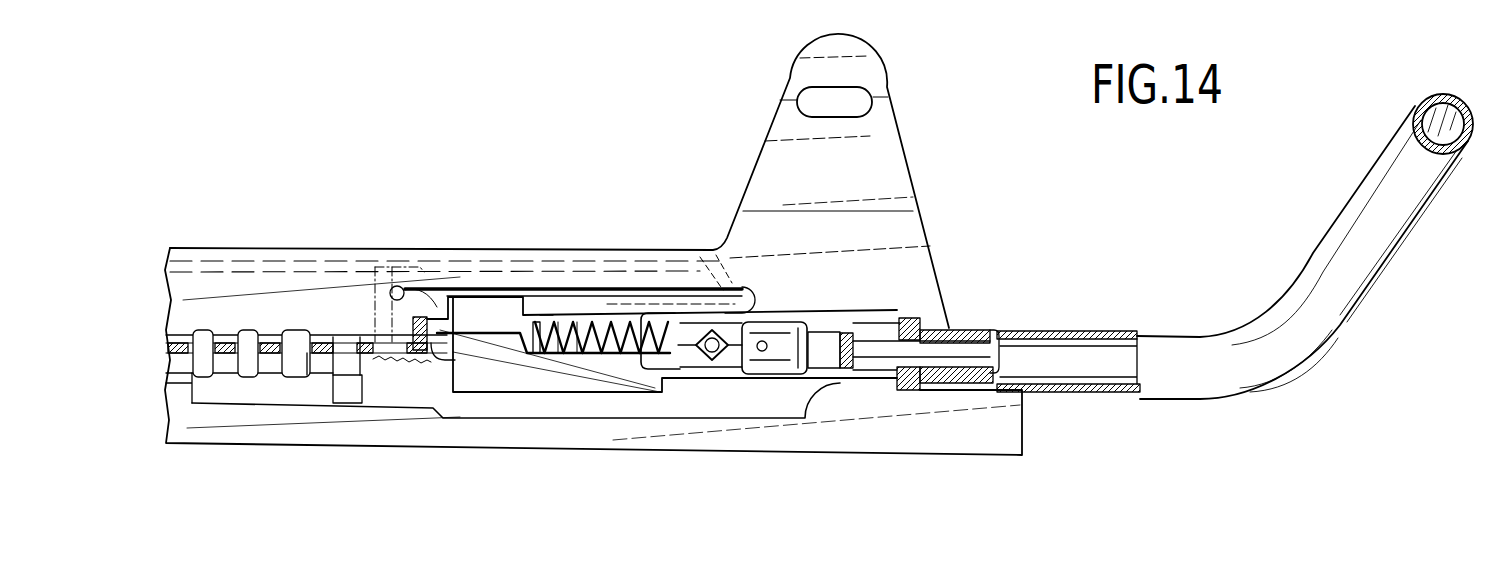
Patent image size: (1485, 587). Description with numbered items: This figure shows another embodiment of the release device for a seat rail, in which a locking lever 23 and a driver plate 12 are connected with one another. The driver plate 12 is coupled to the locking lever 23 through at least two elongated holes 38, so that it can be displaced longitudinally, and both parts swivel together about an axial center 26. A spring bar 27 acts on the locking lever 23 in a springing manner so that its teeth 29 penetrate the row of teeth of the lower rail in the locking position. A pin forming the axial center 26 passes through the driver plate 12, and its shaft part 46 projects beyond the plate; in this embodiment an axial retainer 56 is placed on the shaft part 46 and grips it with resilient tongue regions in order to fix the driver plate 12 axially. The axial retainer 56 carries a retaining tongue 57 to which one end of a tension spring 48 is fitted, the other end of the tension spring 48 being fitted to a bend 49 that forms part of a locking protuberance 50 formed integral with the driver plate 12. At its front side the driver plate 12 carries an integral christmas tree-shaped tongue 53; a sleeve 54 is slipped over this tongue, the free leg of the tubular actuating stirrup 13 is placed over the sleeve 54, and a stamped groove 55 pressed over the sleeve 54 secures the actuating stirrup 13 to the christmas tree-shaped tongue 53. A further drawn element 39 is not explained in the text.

The driver plate 12 is at (558, 392).
The actuating stirrup 13 is at (1192, 367).
The locking lever 23 is at (500, 406).
The axial center 26 is at (713, 361).
The spring bar 27 is at (538, 285).
The teeth 29 is at (298, 353).
The elongated holes 38 is at (826, 331).
The threaded rod 39 is at (857, 342).
The shaft part 46 is at (717, 367).
The tension spring 48 is at (615, 362).
The bend 49 is at (420, 317).
The locking protuberance 50 is at (440, 318).
The christmas tree-shaped tongue 53 is at (992, 331).
The sleeve 54 is at (907, 391).
The stamped groove 55 is at (955, 378).
The axial retainer 56 is at (673, 330).
The retaining tongue 57 is at (783, 348).